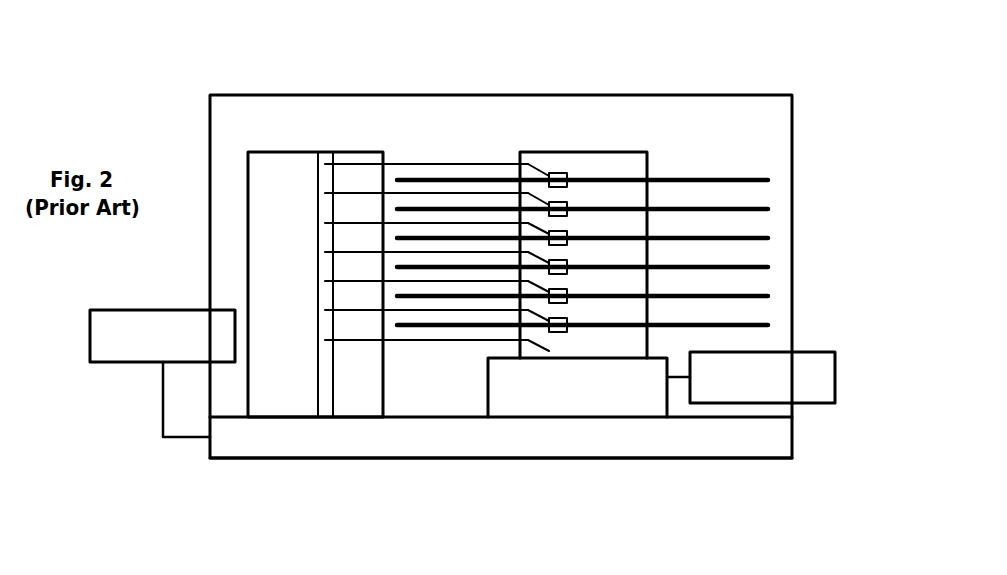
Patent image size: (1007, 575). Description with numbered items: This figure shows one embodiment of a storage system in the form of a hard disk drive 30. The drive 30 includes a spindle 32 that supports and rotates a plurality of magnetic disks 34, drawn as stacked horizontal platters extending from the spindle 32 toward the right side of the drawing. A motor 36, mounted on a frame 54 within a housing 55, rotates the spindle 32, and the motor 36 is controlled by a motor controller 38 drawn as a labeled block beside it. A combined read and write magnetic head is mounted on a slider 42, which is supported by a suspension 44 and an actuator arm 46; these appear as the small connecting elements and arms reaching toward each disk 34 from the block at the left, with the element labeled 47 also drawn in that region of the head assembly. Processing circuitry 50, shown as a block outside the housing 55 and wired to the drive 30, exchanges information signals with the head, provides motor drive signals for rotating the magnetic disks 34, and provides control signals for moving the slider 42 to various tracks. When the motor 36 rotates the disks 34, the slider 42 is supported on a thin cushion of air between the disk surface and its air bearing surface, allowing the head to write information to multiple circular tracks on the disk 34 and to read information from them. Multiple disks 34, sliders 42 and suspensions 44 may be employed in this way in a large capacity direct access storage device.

The hard disk drive 30 is at (697, 146).
The spindle 32 is at (630, 152).
The magnetic disks 34 is at (745, 181).
The motor 36 is at (596, 402).
The motor controller 38 is at (825, 406).
The slider 42 is at (571, 176).
The suspension 44 is at (530, 162).
The actuator arm 46 is at (473, 197).
The preamplifier circuit board 47 is at (288, 151).
The processing circuitry 50 is at (146, 308).
The frame 54 is at (316, 458).
The housing 55 is at (655, 94).